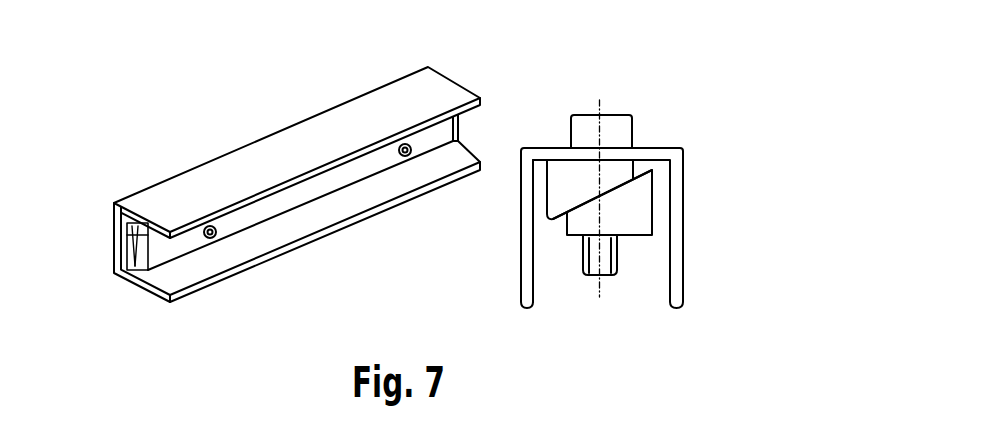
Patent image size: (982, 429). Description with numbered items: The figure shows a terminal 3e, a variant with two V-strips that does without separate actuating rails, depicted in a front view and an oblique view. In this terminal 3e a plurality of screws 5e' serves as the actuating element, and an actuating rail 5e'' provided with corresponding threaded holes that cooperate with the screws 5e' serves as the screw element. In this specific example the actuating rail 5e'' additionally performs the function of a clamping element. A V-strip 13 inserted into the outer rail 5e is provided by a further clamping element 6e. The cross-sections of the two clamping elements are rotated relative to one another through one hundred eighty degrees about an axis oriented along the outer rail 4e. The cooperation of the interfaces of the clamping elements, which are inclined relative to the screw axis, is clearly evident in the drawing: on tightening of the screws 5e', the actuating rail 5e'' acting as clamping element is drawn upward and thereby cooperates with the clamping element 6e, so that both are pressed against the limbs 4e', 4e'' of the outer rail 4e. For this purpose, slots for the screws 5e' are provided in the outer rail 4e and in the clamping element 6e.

The terminal 3e is at (124, 106).
The outer rail 4e is at (479, 184).
The limb of the outer rail 4e' is at (641, 228).
The limb of the outer rail 4e'' is at (651, 231).
The outer rail 5e is at (443, 222).
The screws 5e' is at (666, 134).
The actuating rail 5e'' is at (405, 245).
The clamping element 6e is at (82, 257).
The V-strip 13 is at (563, 210).